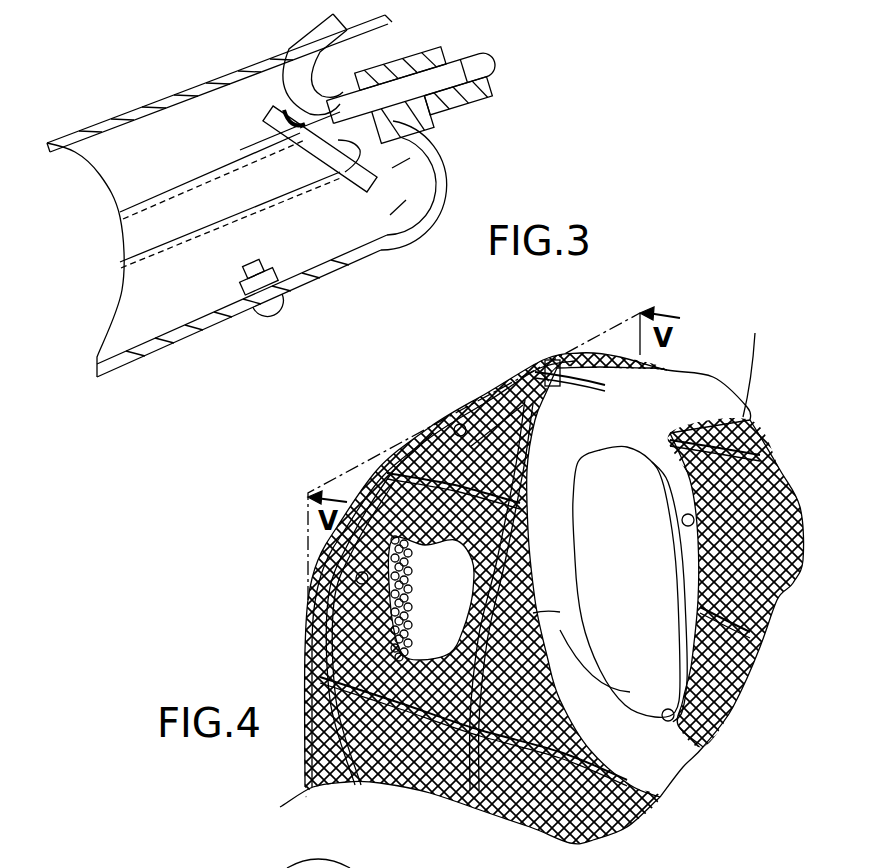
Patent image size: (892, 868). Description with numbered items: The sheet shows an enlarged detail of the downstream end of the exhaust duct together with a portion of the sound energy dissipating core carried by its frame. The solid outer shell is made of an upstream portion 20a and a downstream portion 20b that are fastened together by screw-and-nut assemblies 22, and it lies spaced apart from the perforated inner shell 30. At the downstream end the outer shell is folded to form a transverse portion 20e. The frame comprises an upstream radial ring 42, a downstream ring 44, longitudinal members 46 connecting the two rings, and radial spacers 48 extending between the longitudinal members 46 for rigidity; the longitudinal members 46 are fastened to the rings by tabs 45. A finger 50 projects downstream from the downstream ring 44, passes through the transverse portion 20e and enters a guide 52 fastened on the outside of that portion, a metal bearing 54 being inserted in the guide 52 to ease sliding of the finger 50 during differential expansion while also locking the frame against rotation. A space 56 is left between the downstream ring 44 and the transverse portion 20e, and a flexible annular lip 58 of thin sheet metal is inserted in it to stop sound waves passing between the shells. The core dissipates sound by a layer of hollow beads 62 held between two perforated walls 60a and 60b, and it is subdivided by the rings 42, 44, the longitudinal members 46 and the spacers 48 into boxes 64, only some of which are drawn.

In FIG. 3, the upstream portion 20a is at (173, 337).
In FIG. 3, the downstream portion 20b is at (390, 240).
In FIG. 3, the transverse portion 20e is at (323, 100).
In FIG. 3, the screw-and-nut assemblies 22 is at (270, 313).
In FIG. 3, the perforated inner shell 30 is at (186, 83).
In FIG. 4, the radial ring 42 is at (683, 568).
In FIG. 3, the downstream ring 44 is at (358, 178).
In FIG. 4, the downstream ring 44 is at (723, 388).
In FIG. 3, the tabs 45 is at (290, 148).
In FIG. 3, the longitudinal members 46 is at (133, 237).
In FIG. 4, the longitudinal members 46 is at (630, 690).
In FIG. 4, the radial spacers 48 is at (533, 613).
In FIG. 3, the finger 50 is at (483, 67).
In FIG. 3, the guide 52 is at (480, 100).
In FIG. 3, the metal bearing 54 is at (407, 67).
In FIG. 3, the space 56 is at (285, 133).
In FIG. 3, the flexible annular lip 58 is at (298, 118).
In FIG. 3, the perforated wall 60a is at (187, 190).
In FIG. 3, the perforated wall 60b is at (197, 237).
In FIG. 4, the hollow beads 62 is at (402, 590).
In FIG. 4, the boxes 64 is at (432, 433).